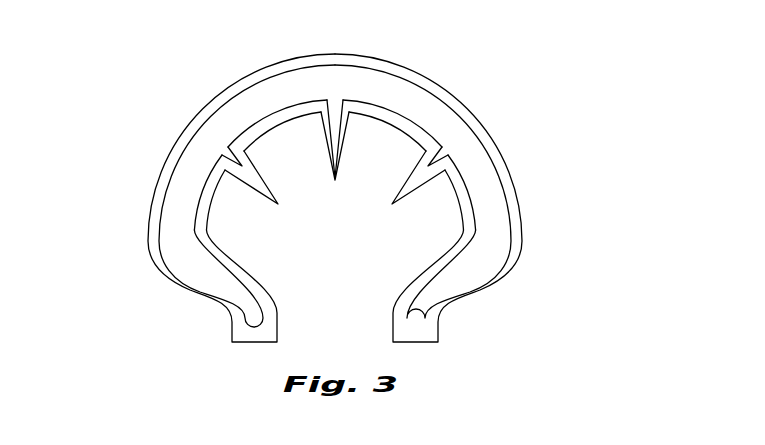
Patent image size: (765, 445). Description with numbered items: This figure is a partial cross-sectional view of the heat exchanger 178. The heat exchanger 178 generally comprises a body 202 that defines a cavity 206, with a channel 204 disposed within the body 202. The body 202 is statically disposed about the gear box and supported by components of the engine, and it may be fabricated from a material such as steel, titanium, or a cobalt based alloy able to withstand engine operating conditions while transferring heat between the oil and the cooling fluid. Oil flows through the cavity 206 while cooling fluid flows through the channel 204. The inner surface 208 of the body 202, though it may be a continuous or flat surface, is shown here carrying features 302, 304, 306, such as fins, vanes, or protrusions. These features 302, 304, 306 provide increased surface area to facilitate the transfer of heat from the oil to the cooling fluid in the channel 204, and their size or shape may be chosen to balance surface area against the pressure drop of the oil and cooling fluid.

The heat exchanger 178 is at (530, 82).
The body 202 is at (158, 252).
The channel 204 is at (491, 153).
The cavity 206 is at (405, 174).
The inner surface 208 is at (280, 123).
The feature 302 is at (290, 217).
The feature 304 is at (338, 195).
The feature 306 is at (380, 216).